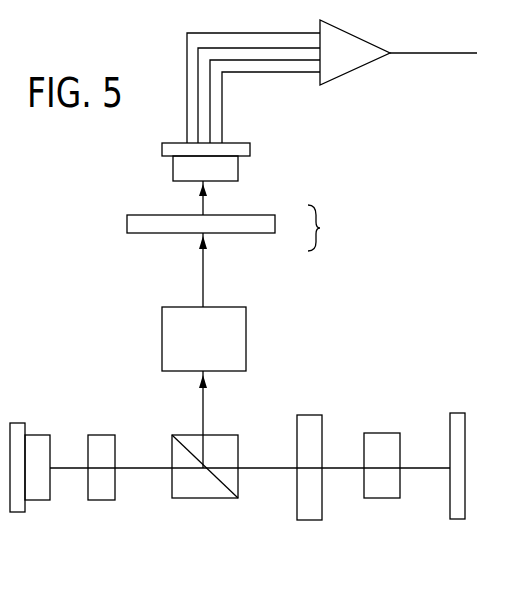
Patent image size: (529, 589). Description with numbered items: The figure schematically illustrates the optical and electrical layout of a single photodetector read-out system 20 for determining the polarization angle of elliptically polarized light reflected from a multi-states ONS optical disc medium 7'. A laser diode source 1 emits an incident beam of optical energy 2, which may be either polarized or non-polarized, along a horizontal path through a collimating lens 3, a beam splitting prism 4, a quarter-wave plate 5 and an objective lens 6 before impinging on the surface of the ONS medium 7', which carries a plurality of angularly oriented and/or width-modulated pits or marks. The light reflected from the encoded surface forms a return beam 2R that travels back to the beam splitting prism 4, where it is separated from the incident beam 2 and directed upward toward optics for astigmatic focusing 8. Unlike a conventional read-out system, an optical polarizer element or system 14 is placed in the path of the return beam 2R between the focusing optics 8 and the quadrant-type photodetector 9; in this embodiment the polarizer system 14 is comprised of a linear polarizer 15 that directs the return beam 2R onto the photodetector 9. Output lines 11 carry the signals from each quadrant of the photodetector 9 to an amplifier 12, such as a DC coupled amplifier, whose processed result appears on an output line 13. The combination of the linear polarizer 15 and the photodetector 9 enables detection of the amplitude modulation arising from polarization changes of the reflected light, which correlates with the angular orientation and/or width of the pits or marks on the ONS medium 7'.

The source of incident beam 1 is at (39, 506).
The incident beam of optical energy 2 is at (68, 476).
The collimating lens 3 is at (106, 503).
The beam splitting prism 4 is at (208, 503).
The quarter-wave plate 5 is at (310, 524).
The objective lens 6 is at (385, 503).
The multi-states ONS optical disc medium 7' is at (461, 495).
The optics for astigmatic focusing 8 is at (248, 335).
The quadrant-type photodetector 9 is at (240, 168).
The output lines 11 is at (224, 93).
The amplifier 12 is at (355, 79).
The output line from amplifier 13 is at (428, 58).
The optical polarizer element or system 14 is at (329, 228).
The linear polarizer 15 is at (253, 236).
The single photodetector read-out system 20 is at (104, 289).
The return beam 2R is at (208, 203).